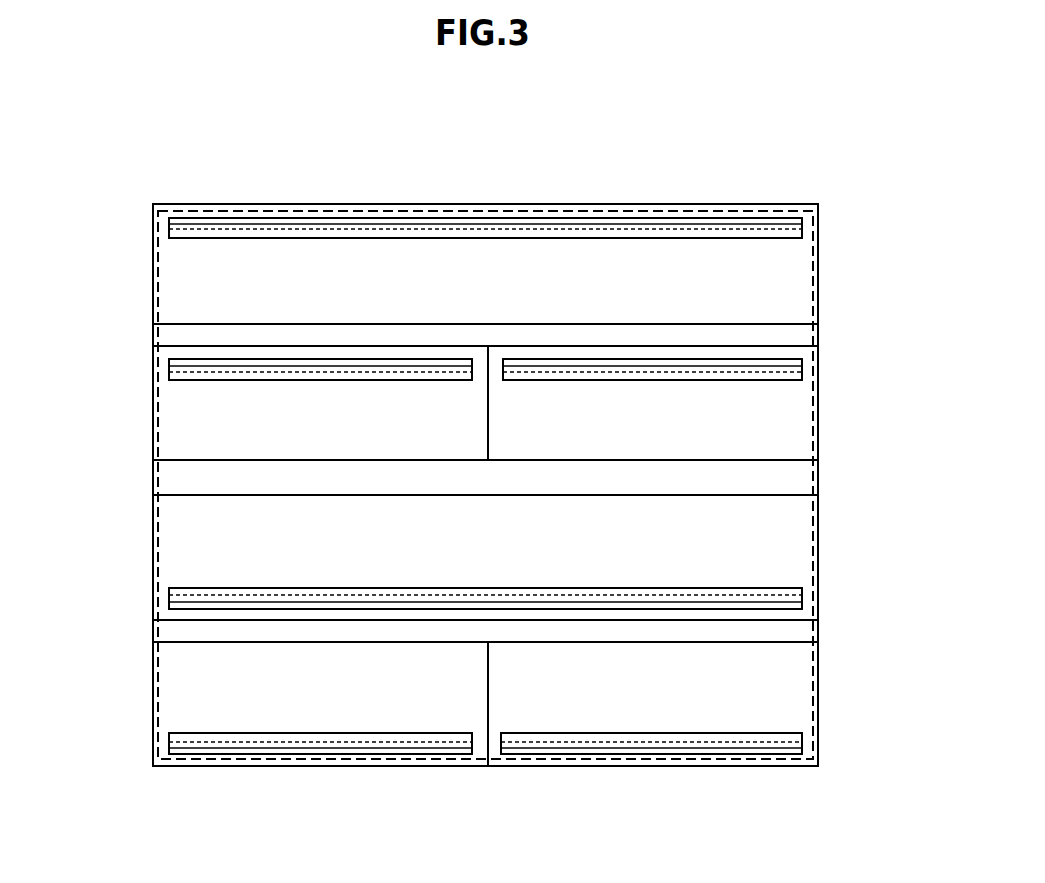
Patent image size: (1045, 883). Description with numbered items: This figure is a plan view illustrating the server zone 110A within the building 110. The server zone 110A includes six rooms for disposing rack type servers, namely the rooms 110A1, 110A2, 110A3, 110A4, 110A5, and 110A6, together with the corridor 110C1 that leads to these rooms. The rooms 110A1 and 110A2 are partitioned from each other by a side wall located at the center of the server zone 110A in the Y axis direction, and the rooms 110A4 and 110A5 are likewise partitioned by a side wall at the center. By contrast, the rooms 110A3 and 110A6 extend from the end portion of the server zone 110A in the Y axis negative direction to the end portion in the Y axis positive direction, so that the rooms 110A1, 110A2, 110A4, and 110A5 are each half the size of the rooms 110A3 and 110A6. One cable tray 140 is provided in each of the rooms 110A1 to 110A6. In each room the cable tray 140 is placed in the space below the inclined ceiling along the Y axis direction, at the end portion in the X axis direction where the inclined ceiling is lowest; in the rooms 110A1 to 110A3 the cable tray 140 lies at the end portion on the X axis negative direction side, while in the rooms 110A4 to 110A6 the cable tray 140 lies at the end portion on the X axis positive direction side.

The building 110 is at (840, 148).
The server zone 110A is at (815, 285).
The room 110A1 is at (183, 697).
The room 110A2 is at (787, 697).
The room 110A3 is at (797, 552).
The room 110A4 is at (183, 414).
The room 110A5 is at (787, 418).
The room 110A6 is at (183, 272).
The corridor 110C1 is at (787, 478).
The cable tray 140 is at (780, 233).